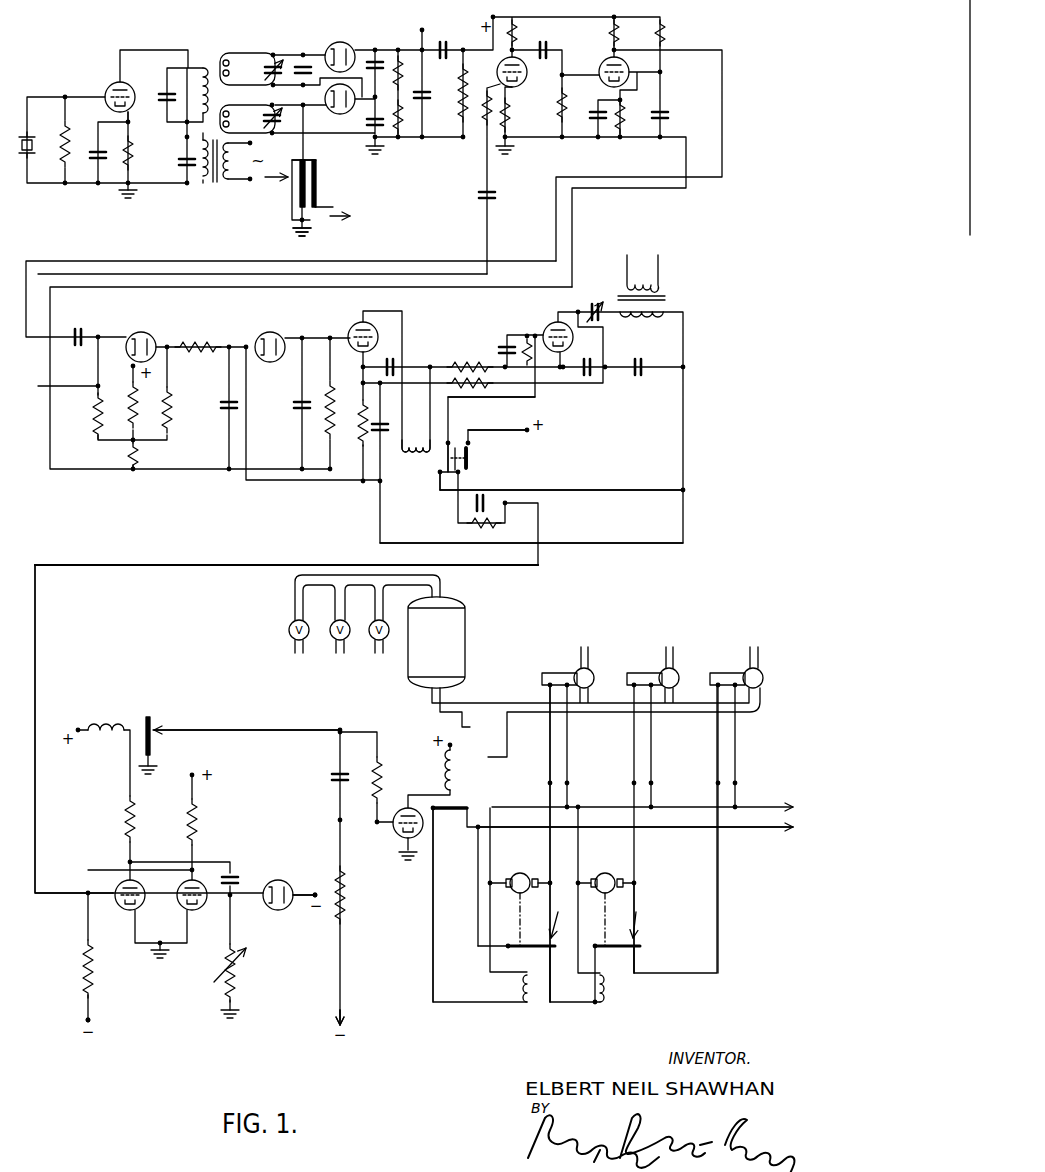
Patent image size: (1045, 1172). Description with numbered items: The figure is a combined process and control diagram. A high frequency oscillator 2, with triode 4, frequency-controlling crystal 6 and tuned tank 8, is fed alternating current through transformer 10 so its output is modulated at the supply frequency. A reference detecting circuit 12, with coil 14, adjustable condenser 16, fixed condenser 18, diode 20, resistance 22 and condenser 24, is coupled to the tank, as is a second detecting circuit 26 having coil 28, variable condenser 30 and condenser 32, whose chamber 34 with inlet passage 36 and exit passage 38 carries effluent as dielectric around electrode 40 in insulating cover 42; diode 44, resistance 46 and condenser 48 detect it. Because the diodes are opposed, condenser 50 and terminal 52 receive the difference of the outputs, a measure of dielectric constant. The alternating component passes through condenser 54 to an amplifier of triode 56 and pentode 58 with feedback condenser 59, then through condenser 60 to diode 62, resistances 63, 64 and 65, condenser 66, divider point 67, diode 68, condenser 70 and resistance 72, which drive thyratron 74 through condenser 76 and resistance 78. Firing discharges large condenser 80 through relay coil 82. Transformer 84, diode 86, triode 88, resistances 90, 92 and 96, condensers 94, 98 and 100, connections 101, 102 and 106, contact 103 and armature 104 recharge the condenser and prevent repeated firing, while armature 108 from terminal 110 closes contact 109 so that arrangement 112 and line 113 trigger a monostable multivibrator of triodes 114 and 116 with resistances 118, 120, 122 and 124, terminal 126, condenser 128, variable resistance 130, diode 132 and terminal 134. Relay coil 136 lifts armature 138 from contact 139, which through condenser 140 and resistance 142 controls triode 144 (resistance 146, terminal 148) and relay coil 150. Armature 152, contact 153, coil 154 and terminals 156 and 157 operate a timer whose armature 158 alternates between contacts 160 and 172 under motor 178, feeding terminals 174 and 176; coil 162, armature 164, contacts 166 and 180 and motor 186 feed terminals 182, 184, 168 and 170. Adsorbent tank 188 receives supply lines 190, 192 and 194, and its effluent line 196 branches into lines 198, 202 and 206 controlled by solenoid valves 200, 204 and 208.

The high frequency oscillator 2 is at (108, 63).
The triode 4 is at (130, 108).
The frequency-controlling crystal 6 is at (29, 140).
The tuned tank 8 is at (194, 76).
The transformer 10 is at (214, 190).
The tuned detecting circuit 12 is at (242, 52).
The coil 14 is at (247, 69).
The adjustable condenser 16 is at (270, 55).
The fixed condenser 18 is at (304, 55).
The diode 20 is at (345, 42).
The resistance 22 is at (399, 54).
The condenser 24 is at (374, 56).
The second detecting circuit 26 is at (257, 135).
The coil 28 is at (247, 119).
The variable condenser 30 is at (268, 112).
The condenser 32 is at (328, 197).
The cylindrical chamber 34 is at (292, 205).
The inlet passage 36 is at (285, 180).
The exit passage 38 is at (325, 222).
The electrode 40 is at (310, 192).
The insulating cover 42 is at (310, 162).
The diode 44 is at (337, 113).
The resistance 46 is at (400, 124).
The condenser 48 is at (380, 140).
The condenser 50 is at (427, 99).
The terminal 52 is at (423, 31).
The condenser 54 is at (448, 57).
The triode 56 is at (527, 80).
The pentode 58 is at (601, 64).
The condenser 59 is at (493, 194).
The condenser 60 is at (84, 332).
The diode 62 is at (151, 333).
The resistance 63 is at (172, 418).
The resistance 64 is at (201, 341).
The resistance 65 is at (94, 420).
The condenser 66 is at (222, 404).
The point of voltage divider 67 is at (140, 448).
The second diode 68 is at (270, 332).
The condenser 70 is at (297, 402).
The resistance 72 is at (336, 418).
The thyratron 74 is at (356, 326).
The condenser 76 is at (384, 450).
The resistance 78 is at (358, 440).
The large condenser 80 is at (398, 362).
The relay coil 82 is at (412, 450).
The transformer 84 is at (672, 298).
The diode 86 is at (598, 303).
The triode 88 is at (550, 326).
The resistance 90 is at (466, 362).
The resistance 92 is at (523, 336).
The condenser 94 is at (502, 348).
The resistance 96 is at (484, 392).
The condenser 98 is at (581, 364).
The condenser 100 is at (646, 364).
The connection 101 is at (634, 547).
The connection 102 is at (583, 489).
The contact 103 is at (437, 476).
The armature 104 is at (456, 505).
The connection 106 is at (540, 398).
The second armature 108 is at (470, 458).
The contact 109 is at (472, 470).
The positive potential supply terminal 110 is at (522, 432).
The resistance-capacitance arrangement 112 is at (494, 513).
The line 113 is at (539, 566).
The triode 114 is at (120, 910).
The triode 116 is at (198, 910).
The resistance 118 is at (136, 832).
The resistance 120 is at (198, 832).
The resistance 122 is at (86, 888).
The resistance 124 is at (85, 945).
The negative potential supply terminal 126 is at (91, 1019).
The large condenser 128 is at (236, 876).
The variable resistance 130 is at (240, 976).
The diode 132 is at (278, 910).
The negative potential supply terminal 134 is at (314, 890).
The relay coil 136 is at (107, 724).
The armature 138 is at (155, 740).
The contact point 139 is at (160, 726).
The condenser 140 is at (330, 780).
The resistance 142 is at (383, 790).
The triode 144 is at (396, 835).
The resistance 146 is at (345, 896).
The negative potential terminal 148 is at (346, 1015).
The relay coil 150 is at (445, 776).
The armature 152 is at (468, 830).
The contact point 153 is at (480, 790).
The relay coil 154 is at (532, 1000).
The supply terminal 156 is at (795, 810).
The supply terminal 157 is at (640, 832).
The armature 158 is at (552, 944).
The contact point 160 is at (548, 952).
The coil 162 is at (612, 986).
The armature 164 is at (645, 946).
The lower contact point 166 is at (637, 952).
The terminal 168 is at (715, 786).
The terminal 170 is at (738, 784).
The contact point 172 is at (566, 915).
The terminal 174 is at (547, 786).
The terminal 176 is at (569, 786).
The timer motor 178 is at (520, 872).
The upper contact point 180 is at (640, 912).
The terminal 182 is at (630, 786).
The terminal 184 is at (654, 786).
The second timer motor 186 is at (605, 872).
The adsorbent tank 188 is at (466, 650).
The valved supply line 190 is at (296, 653).
The valved supply line 192 is at (338, 653).
The valved supply line 194 is at (377, 653).
The effluent line 196 is at (470, 702).
The branch line 198 is at (589, 656).
The solenoid valve 200 is at (596, 676).
The branch line 202 is at (674, 656).
The solenoid valve 204 is at (681, 676).
The branch line 206 is at (759, 656).
The solenoid valve 208 is at (764, 676).